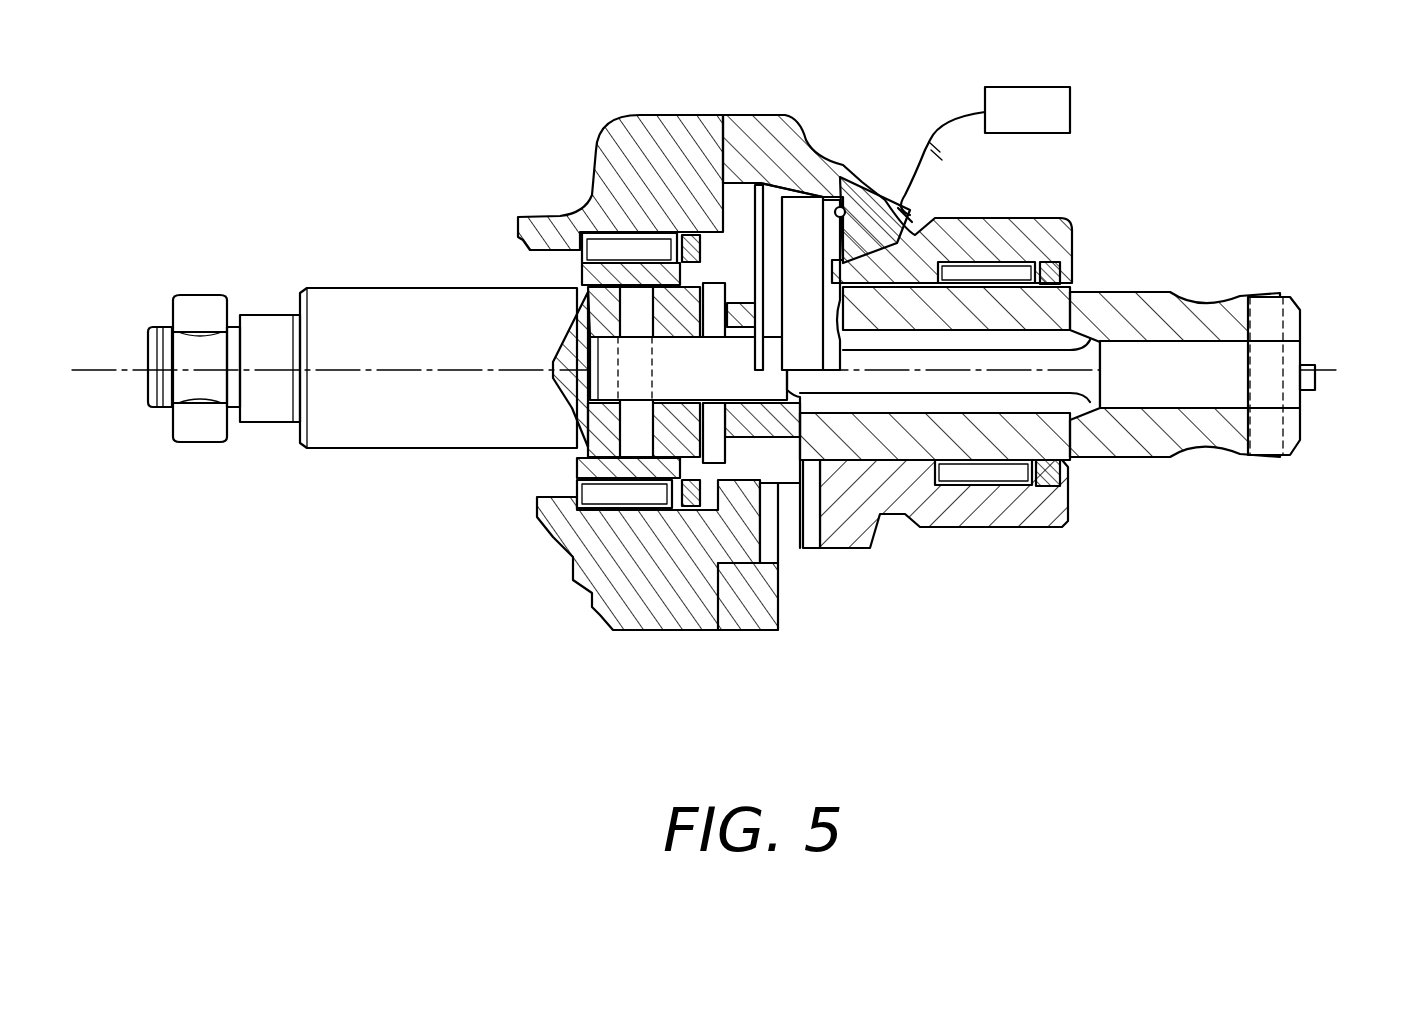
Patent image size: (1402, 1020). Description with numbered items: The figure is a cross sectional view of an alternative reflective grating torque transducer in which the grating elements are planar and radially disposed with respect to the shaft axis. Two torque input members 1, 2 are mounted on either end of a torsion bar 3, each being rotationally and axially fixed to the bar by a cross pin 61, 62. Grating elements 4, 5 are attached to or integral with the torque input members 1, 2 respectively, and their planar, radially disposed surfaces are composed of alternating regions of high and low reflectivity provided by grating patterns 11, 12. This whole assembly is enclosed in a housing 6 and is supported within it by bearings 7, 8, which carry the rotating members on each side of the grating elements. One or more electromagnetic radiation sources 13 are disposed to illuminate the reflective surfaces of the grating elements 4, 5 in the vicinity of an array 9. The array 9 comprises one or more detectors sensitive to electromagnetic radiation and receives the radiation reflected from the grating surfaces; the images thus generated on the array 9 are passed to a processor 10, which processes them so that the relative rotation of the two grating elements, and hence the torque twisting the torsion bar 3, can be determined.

The torque input member 1 is at (1210, 445).
The torque input member 2 is at (362, 432).
The torsion bar 3 is at (1073, 385).
The grating element 4 is at (828, 470).
The grating element 5 is at (793, 545).
The housing 6 is at (815, 577).
The bearing 7 is at (1010, 470).
The bearing 8 is at (605, 493).
The array 9 is at (900, 198).
The processor 10 is at (1072, 95).
The grating pattern 11 is at (813, 465).
The grating pattern 12 is at (800, 478).
The electromagnetic radiation source 13 is at (843, 207).
The cross pin 61 is at (620, 428).
The cross pin 62 is at (1270, 440).